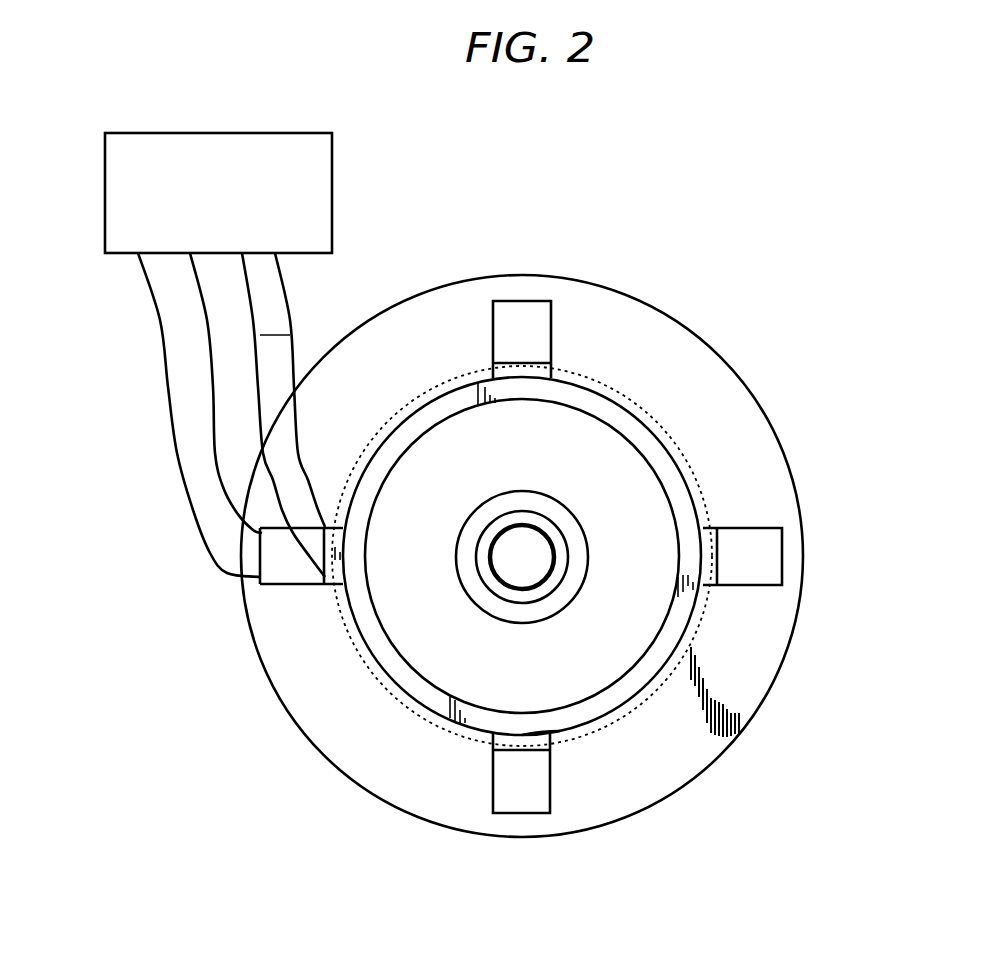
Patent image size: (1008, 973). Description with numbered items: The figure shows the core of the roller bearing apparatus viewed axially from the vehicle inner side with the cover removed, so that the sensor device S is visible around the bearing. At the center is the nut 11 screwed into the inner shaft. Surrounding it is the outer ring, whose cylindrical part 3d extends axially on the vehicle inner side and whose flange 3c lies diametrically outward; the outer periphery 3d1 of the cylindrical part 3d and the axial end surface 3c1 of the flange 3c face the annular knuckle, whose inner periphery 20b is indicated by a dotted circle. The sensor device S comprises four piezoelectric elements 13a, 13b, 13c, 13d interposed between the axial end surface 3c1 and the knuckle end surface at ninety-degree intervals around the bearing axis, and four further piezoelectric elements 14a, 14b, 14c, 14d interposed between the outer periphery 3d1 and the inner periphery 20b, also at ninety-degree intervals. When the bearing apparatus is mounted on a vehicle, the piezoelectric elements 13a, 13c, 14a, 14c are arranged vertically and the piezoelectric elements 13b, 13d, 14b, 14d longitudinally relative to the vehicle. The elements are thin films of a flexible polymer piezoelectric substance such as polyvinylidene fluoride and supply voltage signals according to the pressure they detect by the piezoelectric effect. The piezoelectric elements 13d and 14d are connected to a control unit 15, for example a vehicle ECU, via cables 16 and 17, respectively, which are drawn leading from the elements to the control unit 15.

The sensor device S is at (165, 549).
The flange 3c is at (793, 642).
The axial end surface of the flange 3c1 is at (760, 682).
The cylindrical part 3d is at (623, 690).
The outer periphery of the cylindrical part 3d1 is at (590, 730).
The nut 11 is at (582, 592).
The piezoelectric element 13a is at (532, 312).
The piezoelectric element 13b is at (767, 547).
The piezoelectric element 13c is at (525, 797).
The piezoelectric element 13d is at (285, 570).
The piezoelectric element 14a is at (545, 368).
The piezoelectric element 14b is at (710, 537).
The piezoelectric element 14c is at (508, 742).
The piezoelectric element 14d is at (332, 553).
The control unit 15 is at (333, 195).
The cable 16 is at (290, 333).
The cable 17 is at (205, 360).
The inner periphery of the knuckle 20b is at (425, 727).